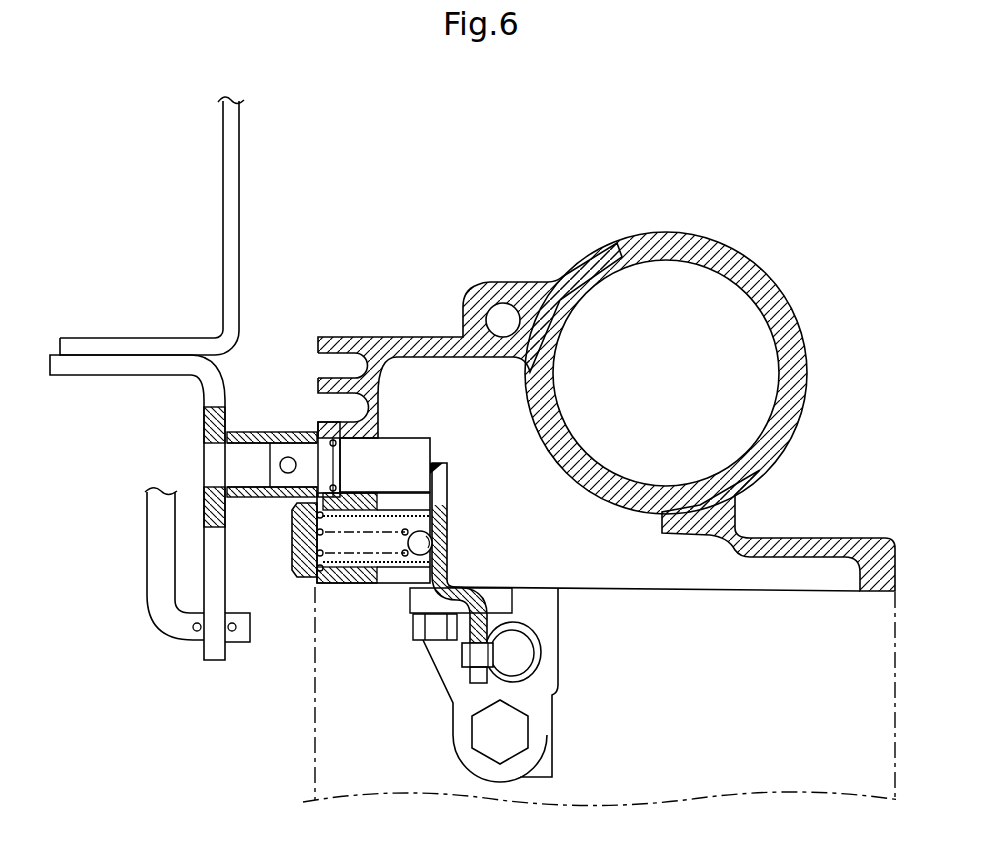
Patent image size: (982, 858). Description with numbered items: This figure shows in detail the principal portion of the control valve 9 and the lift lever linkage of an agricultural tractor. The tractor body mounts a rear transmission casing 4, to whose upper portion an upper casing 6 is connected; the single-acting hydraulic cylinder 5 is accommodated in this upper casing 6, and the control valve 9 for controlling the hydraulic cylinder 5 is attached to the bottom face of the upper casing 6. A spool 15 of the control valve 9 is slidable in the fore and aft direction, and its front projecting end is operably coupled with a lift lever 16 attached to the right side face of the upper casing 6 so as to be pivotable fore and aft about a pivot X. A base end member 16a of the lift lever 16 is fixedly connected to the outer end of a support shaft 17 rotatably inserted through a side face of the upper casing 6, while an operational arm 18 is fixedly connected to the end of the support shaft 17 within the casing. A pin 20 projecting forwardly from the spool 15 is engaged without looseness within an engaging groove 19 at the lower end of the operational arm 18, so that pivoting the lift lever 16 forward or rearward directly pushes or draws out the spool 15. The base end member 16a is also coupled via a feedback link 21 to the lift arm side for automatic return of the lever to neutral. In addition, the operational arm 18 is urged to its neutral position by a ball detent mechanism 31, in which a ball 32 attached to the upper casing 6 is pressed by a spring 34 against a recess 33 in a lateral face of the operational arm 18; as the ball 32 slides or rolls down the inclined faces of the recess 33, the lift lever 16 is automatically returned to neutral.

The rear transmission casing 4 is at (315, 727).
The single-acting hydraulic cylinder 5 is at (784, 371).
The upper casing 6 is at (413, 337).
The control valve 9 is at (559, 711).
The spool 15 is at (522, 652).
The lift lever 16 is at (223, 174).
The base end member 16a is at (128, 373).
The support shaft 17 is at (407, 443).
The operational arm 18 is at (448, 520).
The engaging groove 19 is at (477, 682).
The pin 20 is at (460, 652).
The feedback link 21 is at (148, 548).
The ball detent mechanism 31 is at (403, 579).
The ball 32 is at (446, 546).
The recess 33 is at (404, 514).
The spring 34 is at (292, 537).
The pivot X is at (430, 465).